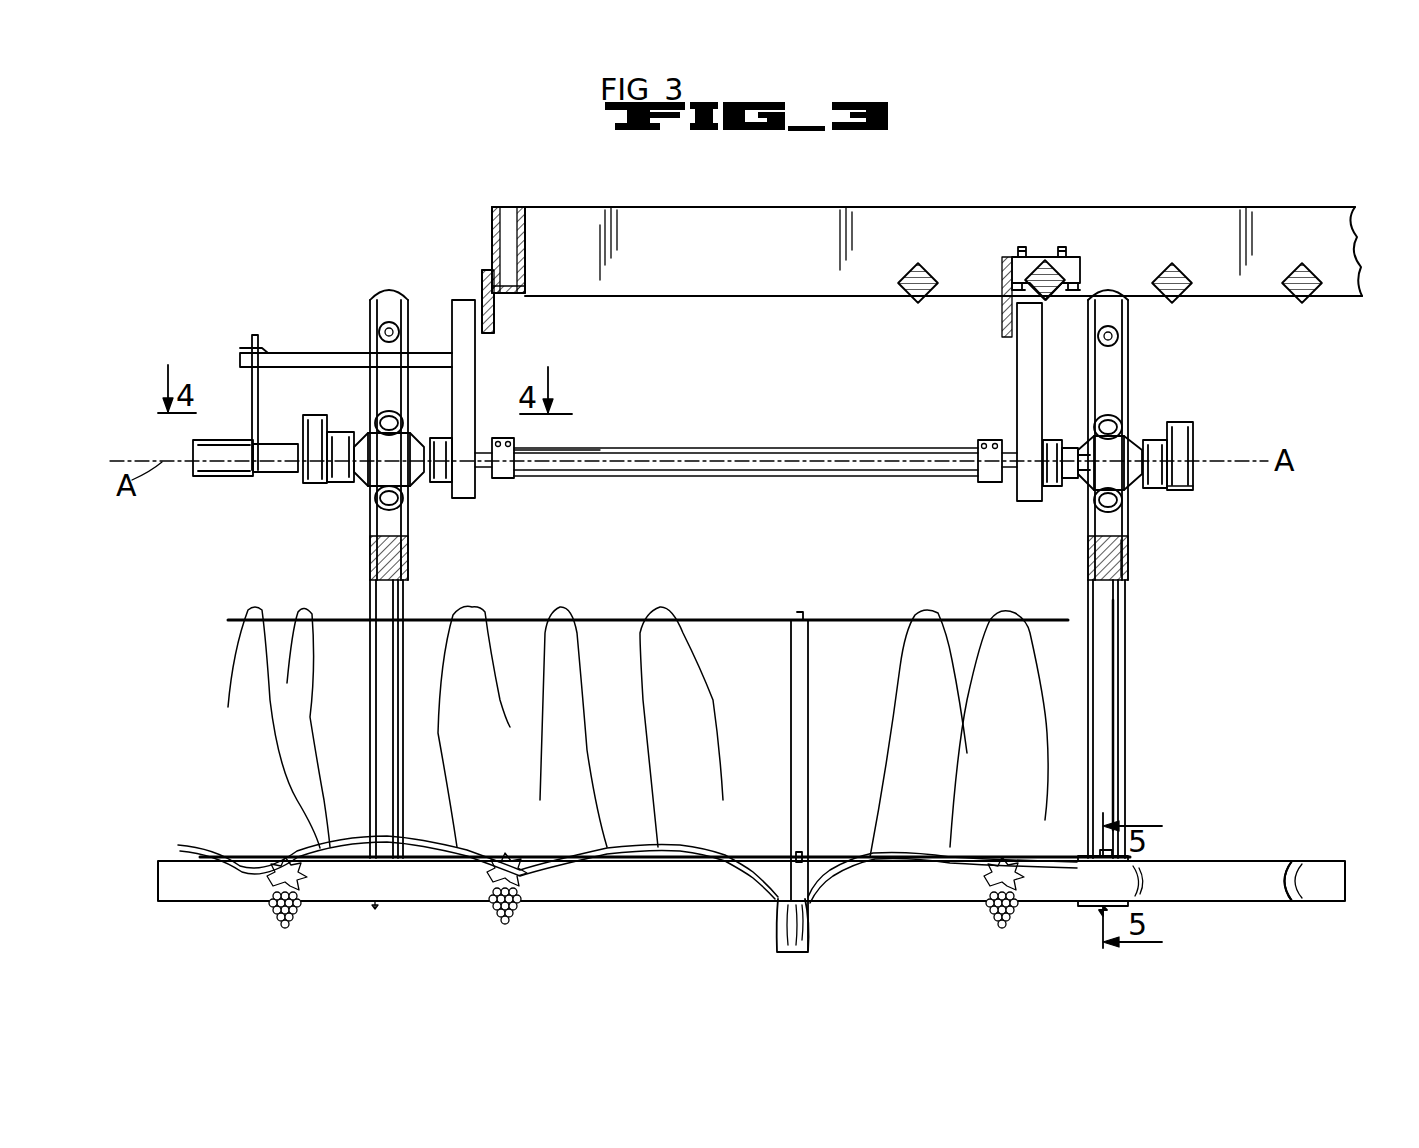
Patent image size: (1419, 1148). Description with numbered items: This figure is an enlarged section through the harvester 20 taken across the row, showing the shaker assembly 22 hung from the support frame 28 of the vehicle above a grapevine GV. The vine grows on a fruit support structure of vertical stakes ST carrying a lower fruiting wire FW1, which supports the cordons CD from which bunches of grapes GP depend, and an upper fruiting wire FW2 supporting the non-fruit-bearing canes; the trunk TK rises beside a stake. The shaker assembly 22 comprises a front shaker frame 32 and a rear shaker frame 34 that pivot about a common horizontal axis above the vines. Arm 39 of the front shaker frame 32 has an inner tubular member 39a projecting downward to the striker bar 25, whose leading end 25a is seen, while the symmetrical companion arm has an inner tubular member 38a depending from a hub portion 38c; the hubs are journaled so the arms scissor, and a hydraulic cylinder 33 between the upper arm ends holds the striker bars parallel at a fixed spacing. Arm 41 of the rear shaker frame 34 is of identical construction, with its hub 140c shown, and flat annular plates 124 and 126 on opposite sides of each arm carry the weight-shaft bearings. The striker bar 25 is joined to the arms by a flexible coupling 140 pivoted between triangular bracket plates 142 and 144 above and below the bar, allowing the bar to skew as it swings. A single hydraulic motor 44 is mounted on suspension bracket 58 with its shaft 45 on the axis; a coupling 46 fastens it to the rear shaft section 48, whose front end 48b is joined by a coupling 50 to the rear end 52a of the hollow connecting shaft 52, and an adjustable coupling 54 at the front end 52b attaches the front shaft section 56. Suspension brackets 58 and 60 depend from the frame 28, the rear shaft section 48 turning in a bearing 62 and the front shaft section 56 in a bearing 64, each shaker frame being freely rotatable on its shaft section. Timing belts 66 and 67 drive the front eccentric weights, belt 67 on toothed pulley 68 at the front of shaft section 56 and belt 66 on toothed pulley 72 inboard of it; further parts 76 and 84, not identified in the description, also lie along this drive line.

The harvester 20 is at (998, 178).
The shaker assembly 22 is at (1205, 362).
The striker bar 25 is at (440, 901).
The front end of striker bar 25a is at (1260, 860).
The support frame 28 is at (1128, 212).
The front shaker frame 32 is at (1134, 345).
The hydraulic cylinder 33 is at (378, 332).
The rear shaker frame 34 is at (376, 300).
The inner tubular member 38a is at (1097, 488).
The hub portion 38c is at (1122, 498).
The arm 39 is at (1130, 680).
The inner tubular member 39a is at (1124, 634).
The arm 41 is at (372, 583).
The hydraulic motor 44 is at (205, 478).
The motor shaft 45 is at (272, 474).
The coupling 46 is at (280, 446).
The rear shaft section 48 is at (425, 446).
The front end of rear shaft section 48b is at (480, 470).
The coupling 50 is at (512, 478).
The connecting shaft 52 is at (790, 472).
The rear end of connecting shaft 52a is at (514, 450).
The front end of connecting shaft 52b is at (978, 476).
The adjustable coupling 54 is at (980, 448).
The front shaft section 56 is at (1068, 448).
The suspension bracket 58 is at (466, 355).
The suspension bracket 60 is at (1022, 360).
The bearing 62 is at (440, 482).
The bearing 64 is at (1050, 438).
The timing belt 66 is at (1172, 490).
The timing belt 67 is at (1180, 432).
The toothed pulley 68 is at (1193, 452).
The toothed pulley 72 is at (1152, 440).
The bushing 76 is at (338, 483).
The sleeve 84 is at (312, 415).
The flat annular plate 124 is at (368, 552).
The flat annular plate 126 is at (410, 552).
The flexible coupling 140 is at (420, 852).
The hub portion 140c is at (370, 440).
The triangular bracket plate 142 is at (1133, 856).
The triangular bracket plate 144 is at (1133, 906).
The lower fruiting wire FW1 is at (764, 856).
The upper fruiting wire FW2 is at (848, 620).
The stake ST is at (805, 696).
The cordon CD is at (603, 847).
The bunches of grapes GP is at (278, 908).
The trunk TK is at (806, 930).
The grapevine GV is at (774, 940).